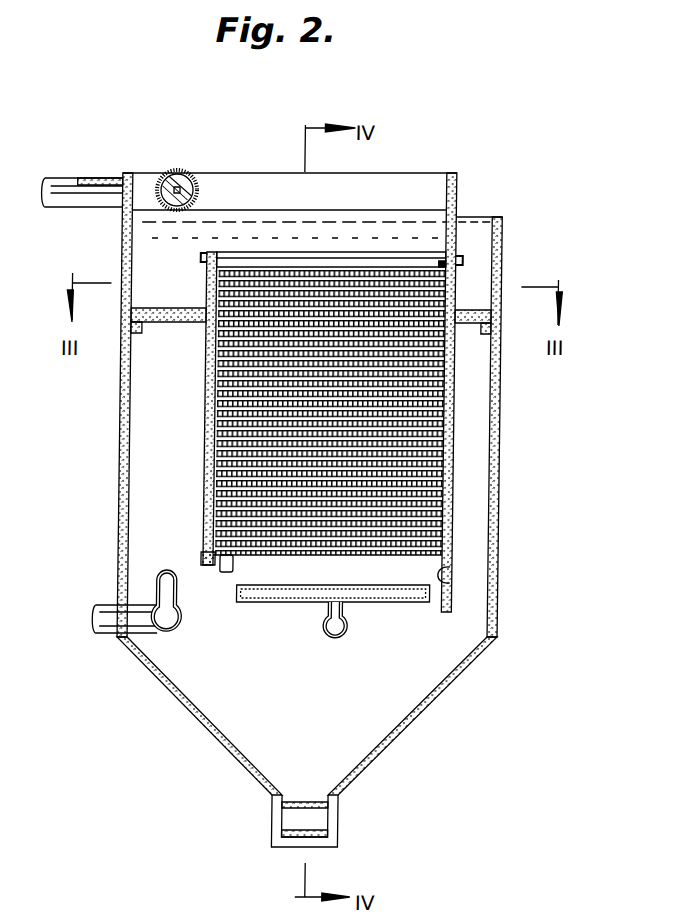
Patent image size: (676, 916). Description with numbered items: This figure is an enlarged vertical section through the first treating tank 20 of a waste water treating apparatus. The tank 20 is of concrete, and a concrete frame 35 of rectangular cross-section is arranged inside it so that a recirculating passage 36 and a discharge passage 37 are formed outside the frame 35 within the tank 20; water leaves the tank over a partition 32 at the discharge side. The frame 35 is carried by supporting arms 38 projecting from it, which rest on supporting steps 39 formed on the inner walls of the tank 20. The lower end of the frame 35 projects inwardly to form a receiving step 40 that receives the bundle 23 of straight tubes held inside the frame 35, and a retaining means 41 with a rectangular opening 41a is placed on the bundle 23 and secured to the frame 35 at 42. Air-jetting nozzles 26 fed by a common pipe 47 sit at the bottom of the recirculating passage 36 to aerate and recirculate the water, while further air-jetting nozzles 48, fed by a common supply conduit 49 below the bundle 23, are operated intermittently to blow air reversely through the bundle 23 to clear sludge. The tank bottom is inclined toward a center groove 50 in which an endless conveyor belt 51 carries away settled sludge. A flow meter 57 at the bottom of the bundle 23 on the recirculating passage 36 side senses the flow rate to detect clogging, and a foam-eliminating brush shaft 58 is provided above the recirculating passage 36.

The first treating tank 20 is at (118, 492).
The bundle of straight tubes 23 is at (455, 480).
The air-jetting nozzles 26 is at (130, 588).
The partition 32 is at (500, 558).
The frame 35 is at (205, 436).
The recirculating passage 36 is at (160, 396).
The discharge passage 37 is at (500, 450).
The supporting arms 38 is at (148, 308).
The supporting steps 39 is at (133, 333).
The receiving step 40 is at (203, 560).
The retaining means 41 is at (215, 255).
The rectangular opening 41a is at (291, 262).
The securing point 42 is at (203, 253).
The common pipe 47 is at (167, 636).
The air-jetting nozzles 48 is at (405, 604).
The common supply conduit 49 is at (338, 642).
The center groove 50 is at (338, 846).
The endless conveyor belt 51 is at (333, 797).
The flow meter 57 is at (227, 575).
The brush shaft 58 is at (174, 168).